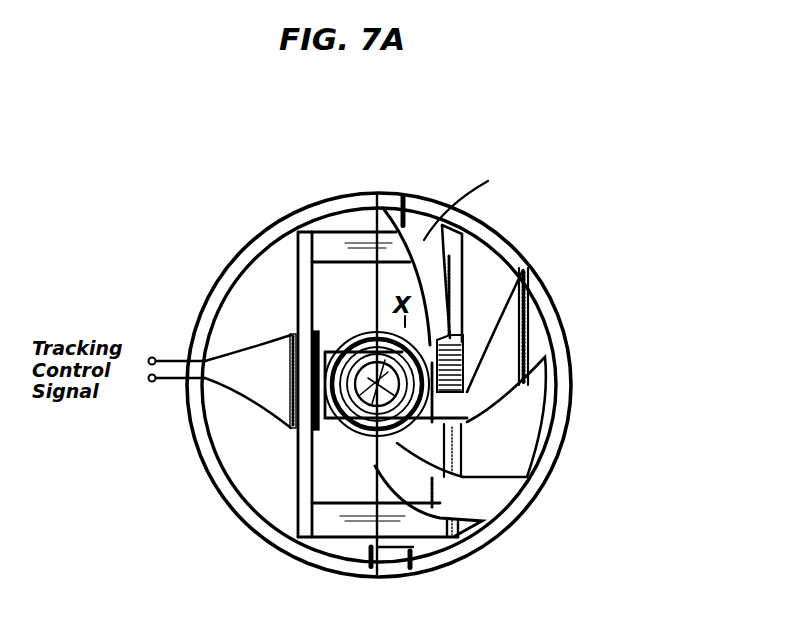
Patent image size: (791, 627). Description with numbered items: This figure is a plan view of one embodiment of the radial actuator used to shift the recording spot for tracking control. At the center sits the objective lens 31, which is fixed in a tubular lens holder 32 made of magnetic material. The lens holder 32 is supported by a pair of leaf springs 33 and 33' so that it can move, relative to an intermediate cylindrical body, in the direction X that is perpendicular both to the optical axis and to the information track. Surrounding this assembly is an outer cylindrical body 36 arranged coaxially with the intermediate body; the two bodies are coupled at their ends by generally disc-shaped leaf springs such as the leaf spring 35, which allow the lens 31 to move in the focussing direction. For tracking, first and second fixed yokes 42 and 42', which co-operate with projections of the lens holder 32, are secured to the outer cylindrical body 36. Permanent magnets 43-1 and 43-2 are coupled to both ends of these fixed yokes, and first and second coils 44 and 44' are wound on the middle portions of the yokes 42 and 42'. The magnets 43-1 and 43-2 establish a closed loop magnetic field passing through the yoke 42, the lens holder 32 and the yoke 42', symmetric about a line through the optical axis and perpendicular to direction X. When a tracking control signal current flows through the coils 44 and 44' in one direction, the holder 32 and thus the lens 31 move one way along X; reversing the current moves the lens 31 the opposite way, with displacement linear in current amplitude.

The objective lens 31 is at (325, 367).
The tubular lens holder 32 is at (313, 423).
The leaf spring 33 is at (348, 261).
The leaf spring 33' is at (338, 495).
The disc-shaped leaf spring 35 is at (471, 314).
The outer cylindrical body 36 is at (215, 465).
The first fixed yoke 42 is at (224, 352).
The second fixed yoke 42' is at (528, 360).
The permanent magnet 43-1 is at (364, 527).
The permanent magnet 43-2 is at (360, 243).
The first coil 44 is at (228, 392).
The second coil 44' is at (512, 309).